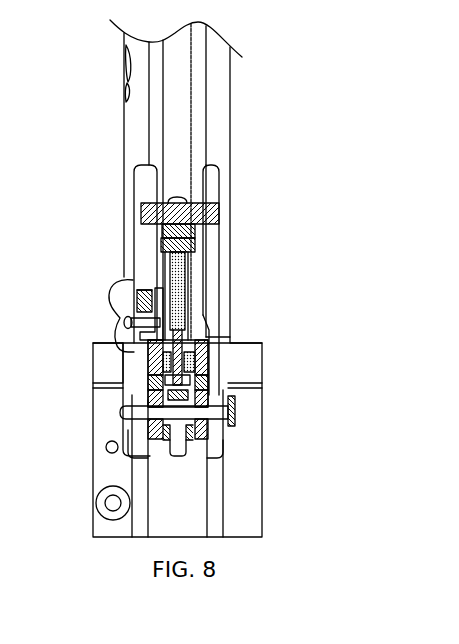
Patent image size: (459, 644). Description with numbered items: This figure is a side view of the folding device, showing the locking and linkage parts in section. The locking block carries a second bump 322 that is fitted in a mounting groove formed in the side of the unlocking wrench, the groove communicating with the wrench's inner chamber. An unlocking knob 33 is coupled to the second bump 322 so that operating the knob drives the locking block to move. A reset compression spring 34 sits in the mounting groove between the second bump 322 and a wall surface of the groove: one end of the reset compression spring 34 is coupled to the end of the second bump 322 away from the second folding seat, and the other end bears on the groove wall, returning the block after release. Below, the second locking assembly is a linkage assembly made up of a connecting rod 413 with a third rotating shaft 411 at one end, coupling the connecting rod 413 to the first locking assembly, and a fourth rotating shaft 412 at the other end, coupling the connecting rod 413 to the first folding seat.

The unlocking knob 33 is at (120, 295).
The reset compression spring 34 is at (135, 313).
The second bump 322 is at (126, 328).
The third rotating shaft 411 is at (219, 211).
The fourth rotating shaft 412 is at (205, 372).
The connecting rod 413 is at (186, 282).